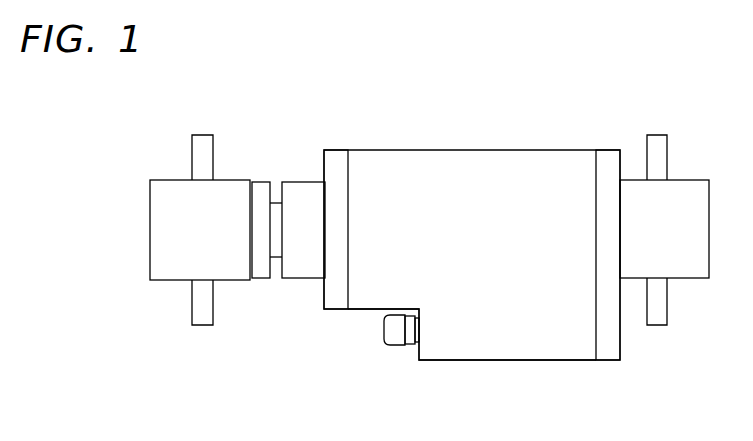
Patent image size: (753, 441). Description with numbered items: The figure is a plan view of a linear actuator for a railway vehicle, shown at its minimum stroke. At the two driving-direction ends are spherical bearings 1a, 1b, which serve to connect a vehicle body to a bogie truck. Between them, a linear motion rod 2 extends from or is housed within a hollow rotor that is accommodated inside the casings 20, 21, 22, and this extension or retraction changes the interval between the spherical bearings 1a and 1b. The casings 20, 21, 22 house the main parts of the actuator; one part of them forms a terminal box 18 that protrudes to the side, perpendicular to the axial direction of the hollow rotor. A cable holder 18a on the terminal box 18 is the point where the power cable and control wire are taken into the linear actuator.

The spherical bearing 1a is at (190, 178).
The spherical bearing 1b is at (672, 281).
The linear motion rod 2 is at (283, 207).
The terminal box 18 is at (482, 348).
The cable holder 18a is at (389, 343).
The casing 20 is at (340, 160).
The casing 21 is at (468, 162).
The casing 22 is at (610, 162).